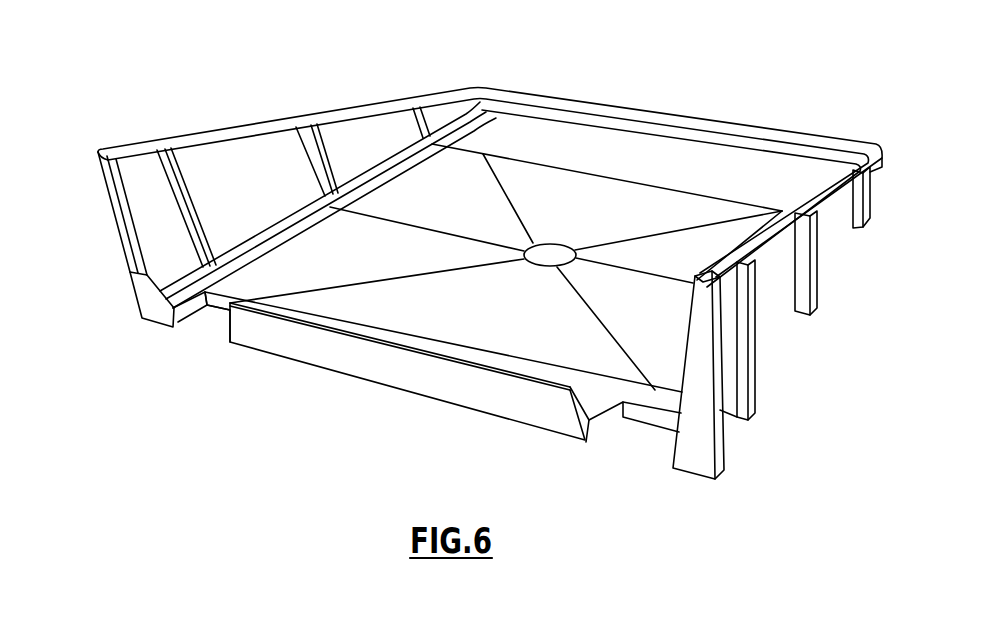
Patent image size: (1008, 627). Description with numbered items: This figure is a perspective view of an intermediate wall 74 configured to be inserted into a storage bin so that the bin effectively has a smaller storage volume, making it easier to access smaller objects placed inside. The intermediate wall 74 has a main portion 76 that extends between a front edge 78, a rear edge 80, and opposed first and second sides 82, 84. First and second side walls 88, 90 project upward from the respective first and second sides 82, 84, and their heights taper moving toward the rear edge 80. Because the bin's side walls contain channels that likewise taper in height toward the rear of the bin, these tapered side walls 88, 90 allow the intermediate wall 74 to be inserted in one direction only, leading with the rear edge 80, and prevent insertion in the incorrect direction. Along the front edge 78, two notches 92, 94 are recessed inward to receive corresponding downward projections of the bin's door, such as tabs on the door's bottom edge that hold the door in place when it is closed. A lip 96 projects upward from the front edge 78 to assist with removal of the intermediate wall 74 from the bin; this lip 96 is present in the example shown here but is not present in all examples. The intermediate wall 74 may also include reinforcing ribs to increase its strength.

The intermediate wall 74 is at (353, 413).
The main portion 76 is at (582, 235).
The front edge 78 is at (478, 393).
The rear edge 80 is at (770, 130).
The first side 82 is at (127, 293).
The second side 84 is at (777, 357).
The first side wall 88 is at (223, 193).
The second side wall 90 is at (773, 288).
The notch 92 is at (218, 328).
The notch 94 is at (647, 450).
The lip 96 is at (385, 342).